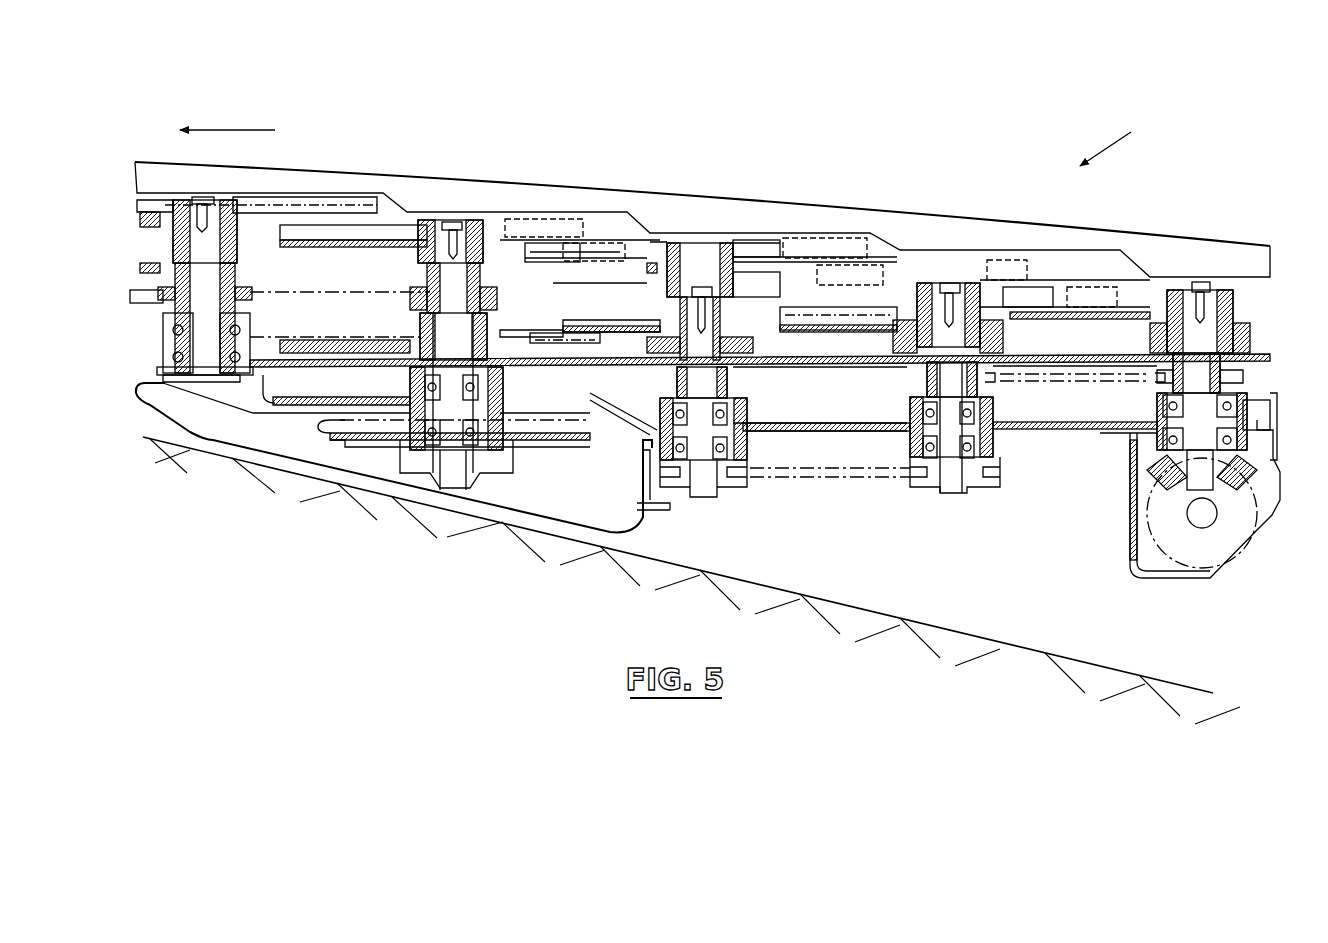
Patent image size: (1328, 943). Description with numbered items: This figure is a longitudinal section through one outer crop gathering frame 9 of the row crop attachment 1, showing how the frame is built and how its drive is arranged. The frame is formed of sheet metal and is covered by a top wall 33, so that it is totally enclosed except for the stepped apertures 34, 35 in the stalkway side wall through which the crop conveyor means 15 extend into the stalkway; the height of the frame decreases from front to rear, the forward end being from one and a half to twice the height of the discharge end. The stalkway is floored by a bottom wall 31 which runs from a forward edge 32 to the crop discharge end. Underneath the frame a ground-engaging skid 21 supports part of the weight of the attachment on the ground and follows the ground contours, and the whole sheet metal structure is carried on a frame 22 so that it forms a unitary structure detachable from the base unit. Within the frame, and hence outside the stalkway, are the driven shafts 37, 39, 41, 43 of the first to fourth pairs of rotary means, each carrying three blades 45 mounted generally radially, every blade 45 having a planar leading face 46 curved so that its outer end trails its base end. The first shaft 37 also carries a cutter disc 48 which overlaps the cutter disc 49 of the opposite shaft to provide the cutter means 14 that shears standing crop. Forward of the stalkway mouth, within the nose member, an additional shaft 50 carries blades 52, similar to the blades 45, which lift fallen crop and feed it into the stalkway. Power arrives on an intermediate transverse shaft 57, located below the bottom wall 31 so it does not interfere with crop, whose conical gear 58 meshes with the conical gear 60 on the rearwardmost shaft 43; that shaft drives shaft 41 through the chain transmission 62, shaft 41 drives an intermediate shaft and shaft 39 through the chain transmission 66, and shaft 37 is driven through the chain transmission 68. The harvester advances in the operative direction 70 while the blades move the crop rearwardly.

The row crop attachment 1 is at (1114, 141).
The outer longitudinally-extending crop gathering frame 9 is at (712, 207).
The cutter means 14 is at (366, 457).
The crop conveyor means 15 is at (505, 247).
The ground-engaging skid 21 is at (506, 524).
The frame 22 is at (1160, 580).
The bottom wall 31 is at (830, 437).
The forward edge 32 is at (641, 441).
The top wall 33 is at (873, 210).
The stepped aperture 34 is at (600, 207).
The stepped aperture 35 is at (623, 323).
The driven shaft 37 is at (447, 310).
The driven shaft 39 is at (713, 391).
The driven shaft 41 is at (943, 372).
The driven shaft 43 is at (1190, 382).
The blade 45 is at (330, 340).
The planar leading face 46 is at (470, 192).
The cutter disc 48 is at (347, 447).
The cutter disc 49 is at (325, 425).
The shaft of additional rotary means 50 is at (217, 287).
The crop conveyor blade 52 is at (318, 208).
The intermediate transverse shaft 57 is at (1217, 528).
The conical gear 58 is at (1262, 520).
The conical gear 60 is at (1237, 475).
The chain transmission 62 is at (1057, 378).
The chain transmission 66 is at (886, 478).
The chain transmission 68 is at (272, 295).
The operative direction 70 is at (232, 130).